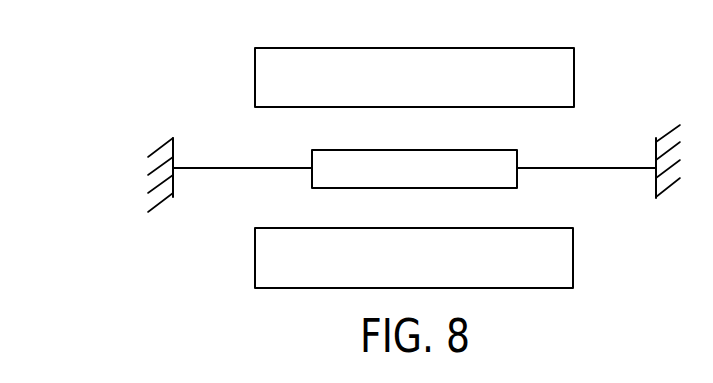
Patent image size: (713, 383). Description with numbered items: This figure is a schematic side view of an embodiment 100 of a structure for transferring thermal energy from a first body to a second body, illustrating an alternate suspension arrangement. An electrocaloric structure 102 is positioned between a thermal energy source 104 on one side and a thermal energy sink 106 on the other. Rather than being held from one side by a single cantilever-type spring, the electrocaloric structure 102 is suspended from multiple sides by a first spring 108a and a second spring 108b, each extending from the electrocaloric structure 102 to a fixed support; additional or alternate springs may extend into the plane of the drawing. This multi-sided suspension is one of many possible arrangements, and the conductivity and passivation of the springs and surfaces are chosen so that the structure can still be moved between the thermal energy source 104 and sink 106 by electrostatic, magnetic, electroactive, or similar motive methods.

The embodiment 100 is at (233, 72).
The electrocaloric structure 102 is at (518, 157).
The thermal energy source 104 is at (573, 262).
The thermal energy sink 106 is at (574, 77).
The first spring 108a is at (228, 168).
The second spring 108b is at (625, 168).